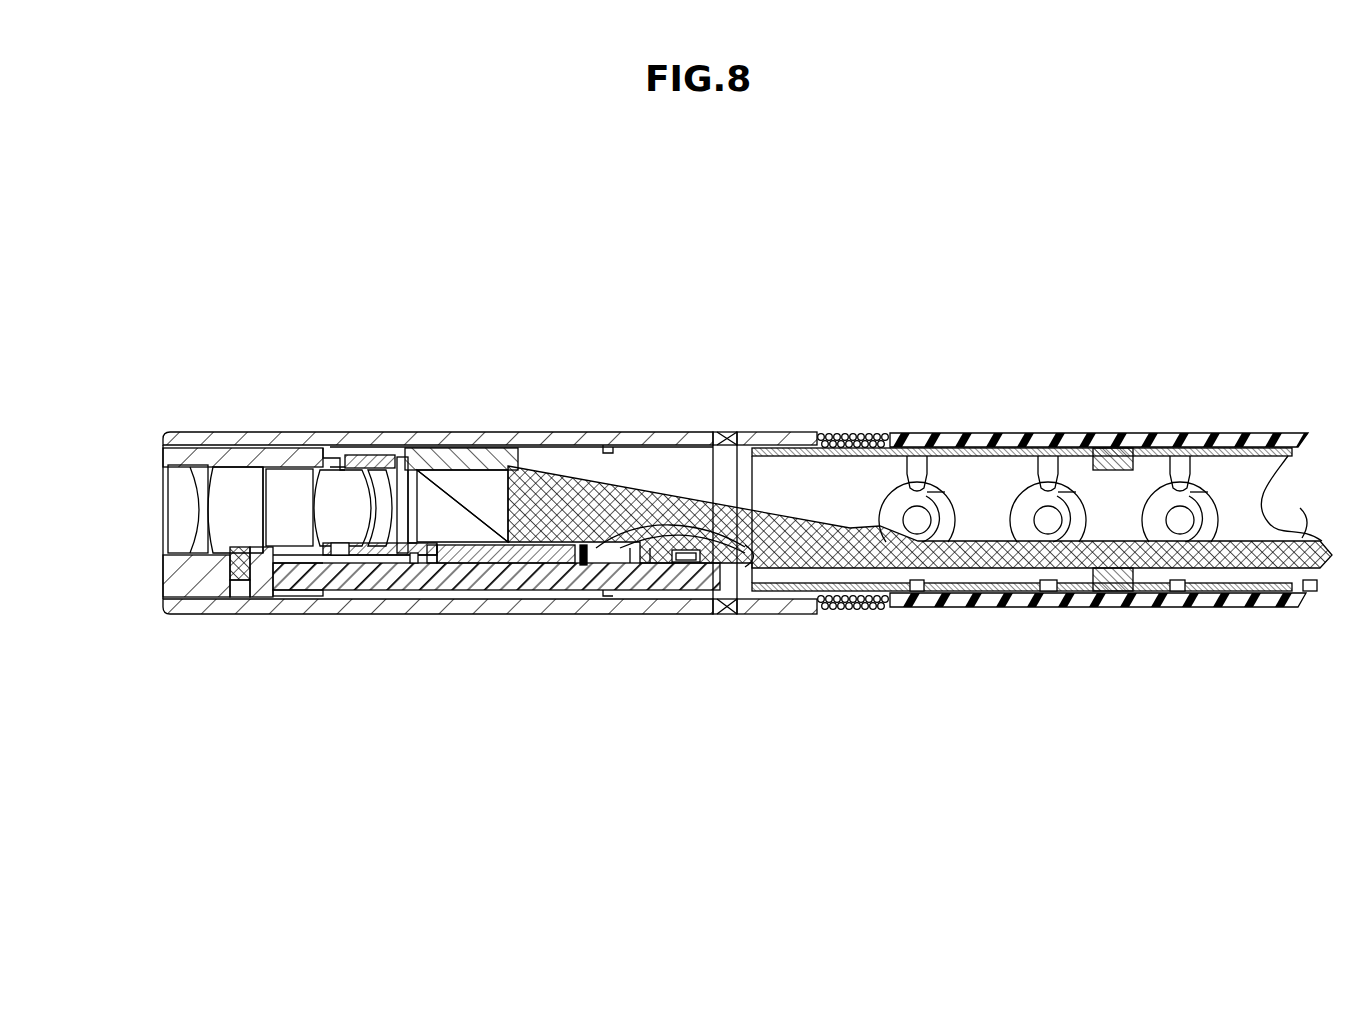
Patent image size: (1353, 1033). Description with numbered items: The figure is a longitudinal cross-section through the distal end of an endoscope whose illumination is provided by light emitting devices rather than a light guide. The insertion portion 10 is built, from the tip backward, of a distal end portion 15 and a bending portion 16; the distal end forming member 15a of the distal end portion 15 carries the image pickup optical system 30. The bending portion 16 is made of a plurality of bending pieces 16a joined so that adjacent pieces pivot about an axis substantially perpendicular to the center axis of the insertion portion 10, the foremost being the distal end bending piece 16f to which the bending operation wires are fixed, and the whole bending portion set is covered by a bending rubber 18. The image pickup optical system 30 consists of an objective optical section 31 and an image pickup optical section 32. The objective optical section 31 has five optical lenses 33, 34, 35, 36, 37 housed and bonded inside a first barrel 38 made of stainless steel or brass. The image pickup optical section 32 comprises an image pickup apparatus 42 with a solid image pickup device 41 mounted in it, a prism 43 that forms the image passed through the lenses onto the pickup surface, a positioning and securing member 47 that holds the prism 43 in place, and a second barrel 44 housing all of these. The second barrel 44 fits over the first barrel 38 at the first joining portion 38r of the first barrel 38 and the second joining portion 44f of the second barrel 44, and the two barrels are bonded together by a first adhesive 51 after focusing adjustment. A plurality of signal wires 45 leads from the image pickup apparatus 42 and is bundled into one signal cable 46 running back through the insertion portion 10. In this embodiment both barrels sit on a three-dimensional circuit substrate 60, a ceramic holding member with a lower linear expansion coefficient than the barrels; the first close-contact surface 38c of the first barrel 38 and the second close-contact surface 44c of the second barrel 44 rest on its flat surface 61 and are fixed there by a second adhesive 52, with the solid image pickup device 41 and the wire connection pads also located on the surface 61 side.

The insertion portion 10 is at (797, 395).
The distal end portion 15 is at (507, 400).
The distal end forming member 15a is at (648, 433).
The bending portion 16 is at (1051, 400).
The bending piece 16a is at (1003, 445).
The distal end bending piece 16f is at (870, 433).
The bending rubber 18 is at (1272, 433).
The image pickup optical system 30 is at (156, 488).
The objective optical section 31 is at (378, 736).
The image pickup optical section 32 is at (562, 736).
The optical lens 33 is at (213, 540).
The optical lens 34 is at (247, 540).
The optical lens 35 is at (280, 540).
The optical lens 36 is at (345, 540).
The optical lens 37 is at (398, 540).
The first barrel 38 is at (187, 540).
The first close-contact surface 38c is at (316, 553).
The first joining portion 38r is at (381, 453).
The solid image pickup device 41 is at (505, 553).
The image pickup apparatus 42 is at (550, 540).
The prism 43 is at (455, 535).
The second barrel 44 is at (427, 545).
The second close-contact surface 44c is at (338, 560).
The second joining portion 44f is at (342, 487).
The signal wire 45 is at (690, 563).
The signal cable 46 is at (970, 568).
The positioning and securing member 47 is at (468, 480).
The first adhesive 51 is at (368, 545).
The second adhesive 52 is at (418, 560).
The three-dimensional circuit substrate 60 is at (637, 585).
The surface 61 is at (612, 590).